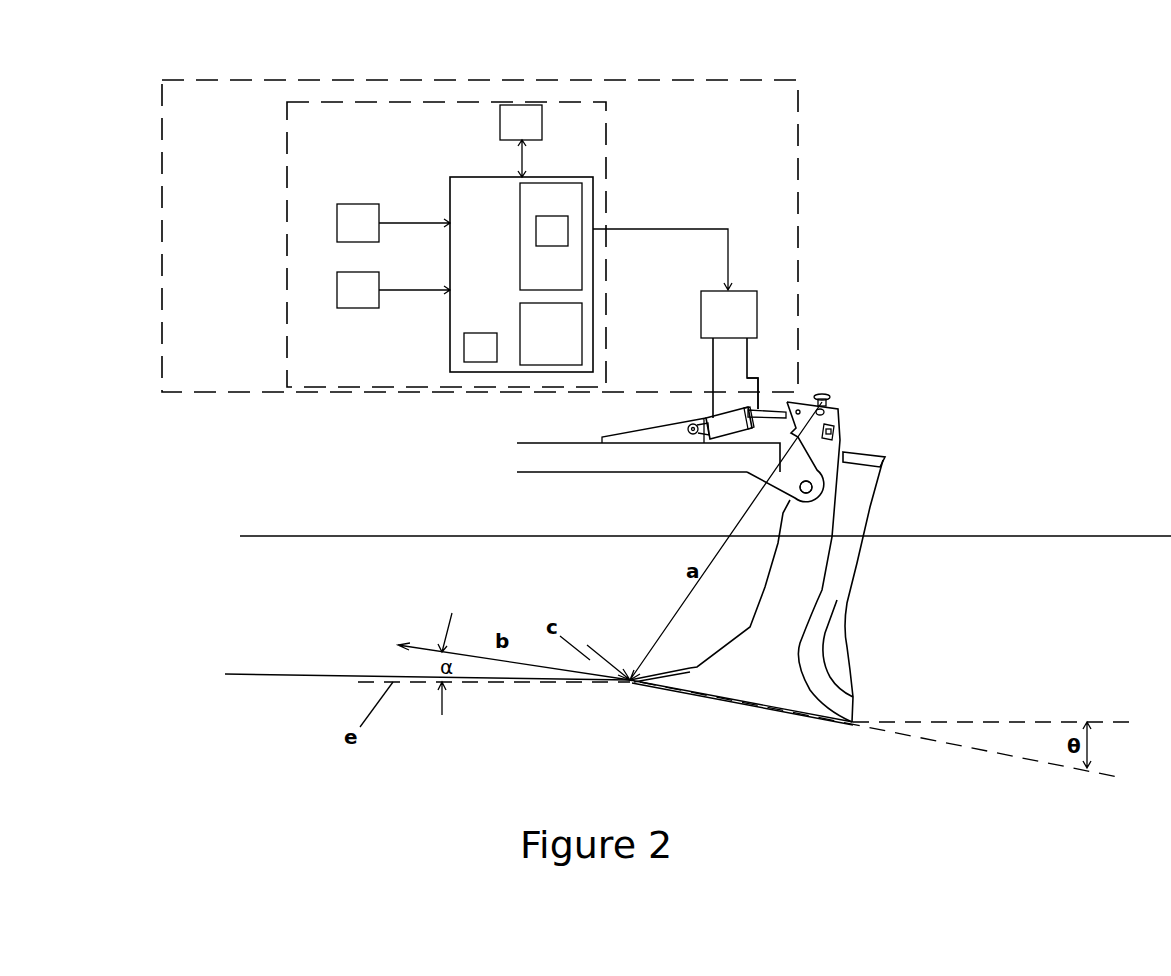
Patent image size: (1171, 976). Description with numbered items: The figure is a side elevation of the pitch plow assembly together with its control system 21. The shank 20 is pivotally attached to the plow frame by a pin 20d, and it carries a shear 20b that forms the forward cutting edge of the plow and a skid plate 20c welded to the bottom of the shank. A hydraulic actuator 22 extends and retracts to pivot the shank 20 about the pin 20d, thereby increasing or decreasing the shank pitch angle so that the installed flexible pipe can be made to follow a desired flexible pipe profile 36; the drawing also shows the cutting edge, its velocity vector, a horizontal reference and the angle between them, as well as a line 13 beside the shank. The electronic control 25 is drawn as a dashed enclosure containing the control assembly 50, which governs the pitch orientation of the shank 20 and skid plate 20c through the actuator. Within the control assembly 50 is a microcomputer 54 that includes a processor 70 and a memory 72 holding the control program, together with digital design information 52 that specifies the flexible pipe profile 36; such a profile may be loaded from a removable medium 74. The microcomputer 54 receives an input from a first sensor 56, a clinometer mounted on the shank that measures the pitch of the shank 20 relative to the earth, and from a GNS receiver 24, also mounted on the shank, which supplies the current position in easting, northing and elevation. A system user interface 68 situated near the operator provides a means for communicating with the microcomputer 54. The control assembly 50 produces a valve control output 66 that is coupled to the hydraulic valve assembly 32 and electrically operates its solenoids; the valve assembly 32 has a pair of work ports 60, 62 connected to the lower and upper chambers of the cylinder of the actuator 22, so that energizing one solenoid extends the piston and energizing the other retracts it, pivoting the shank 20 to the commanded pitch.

The cutting table surface 13 is at (995, 536).
The shank 20 is at (843, 438).
The shear 20b is at (667, 670).
The skid plate 20c is at (780, 712).
The pin 20d is at (812, 485).
The control system 21 is at (917, 181).
The hydraulic actuator 22 is at (706, 420).
The GNS receiver 24 is at (863, 367).
The electronic control 25 is at (500, 2).
The hydraulic valve assembly 32 is at (729, 314).
The flexible pipe profile 36 is at (298, 674).
The control assembly 50 is at (287, 152).
The digital design information 52 is at (552, 231).
The microcomputer 54 is at (521, 274).
The first sensor 56 is at (903, 388).
The work port 60 is at (712, 370).
The work port 62 is at (748, 366).
The valve control output 66 is at (662, 228).
The system user interface 68 is at (521, 141).
The processor 70 is at (480, 347).
The memory 72 is at (551, 236).
The removable medium 74 is at (551, 334).